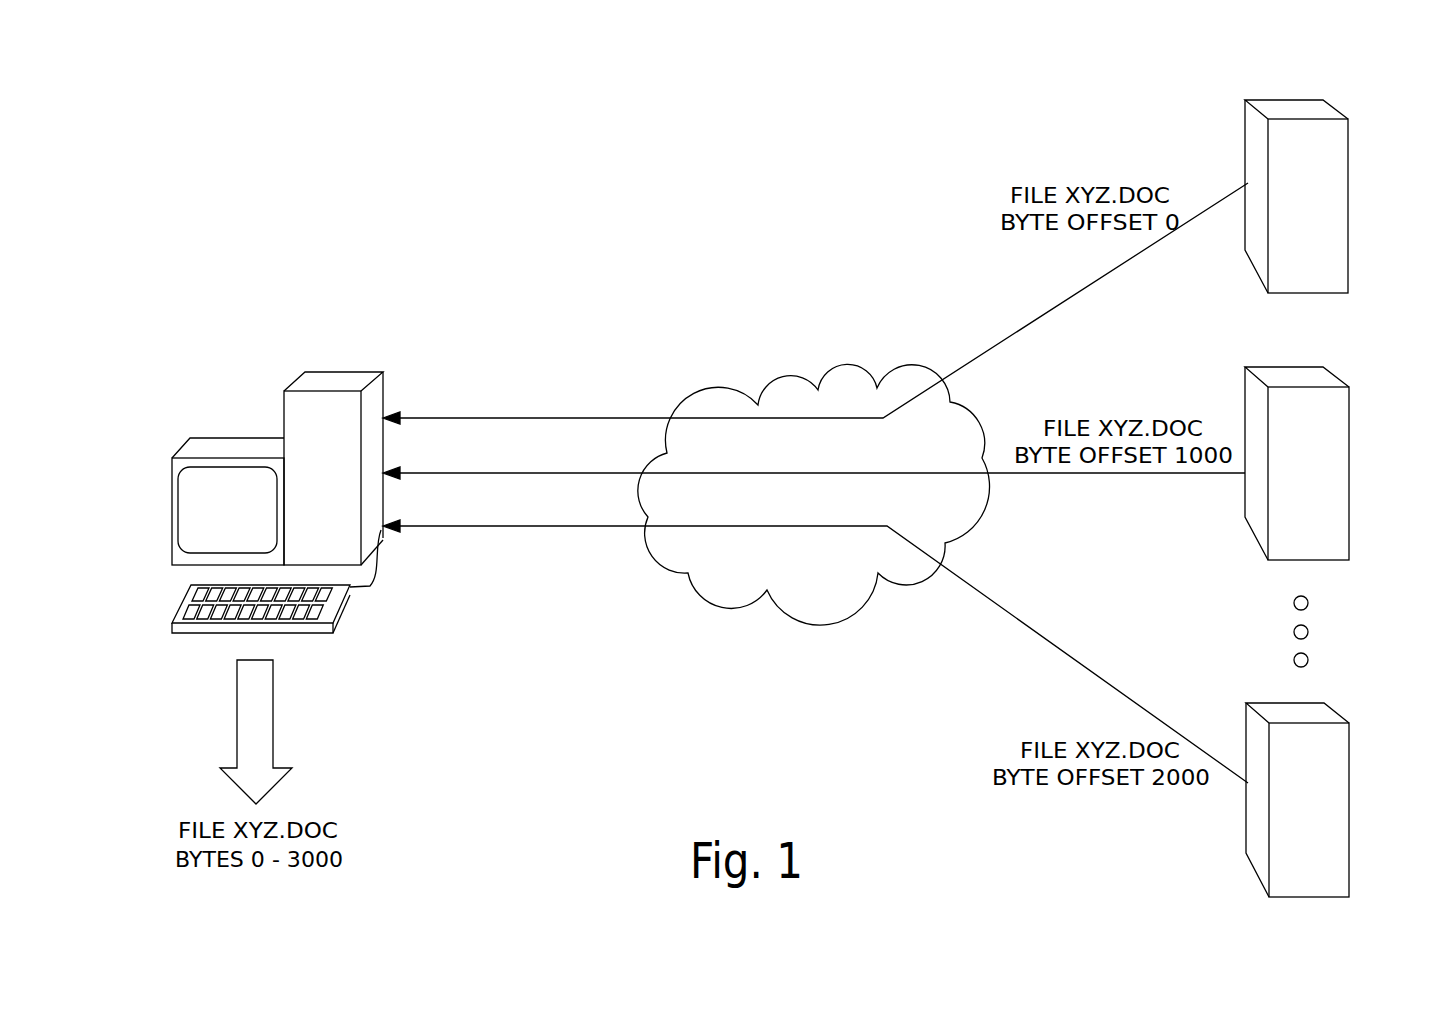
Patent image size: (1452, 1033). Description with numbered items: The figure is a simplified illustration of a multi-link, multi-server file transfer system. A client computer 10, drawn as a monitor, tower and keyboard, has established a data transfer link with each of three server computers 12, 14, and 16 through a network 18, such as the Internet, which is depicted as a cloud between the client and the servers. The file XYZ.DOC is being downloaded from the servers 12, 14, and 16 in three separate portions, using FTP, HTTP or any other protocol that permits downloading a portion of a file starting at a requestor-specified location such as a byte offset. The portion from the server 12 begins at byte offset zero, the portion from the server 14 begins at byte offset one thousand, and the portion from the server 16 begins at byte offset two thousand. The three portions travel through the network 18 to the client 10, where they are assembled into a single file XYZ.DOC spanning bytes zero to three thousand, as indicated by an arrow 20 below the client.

The client computer 10 is at (373, 392).
The server computer 12 is at (1327, 138).
The server computer 14 is at (1328, 403).
The server computer 16 is at (1329, 740).
The network 18 is at (779, 390).
The arrow 20 is at (253, 740).